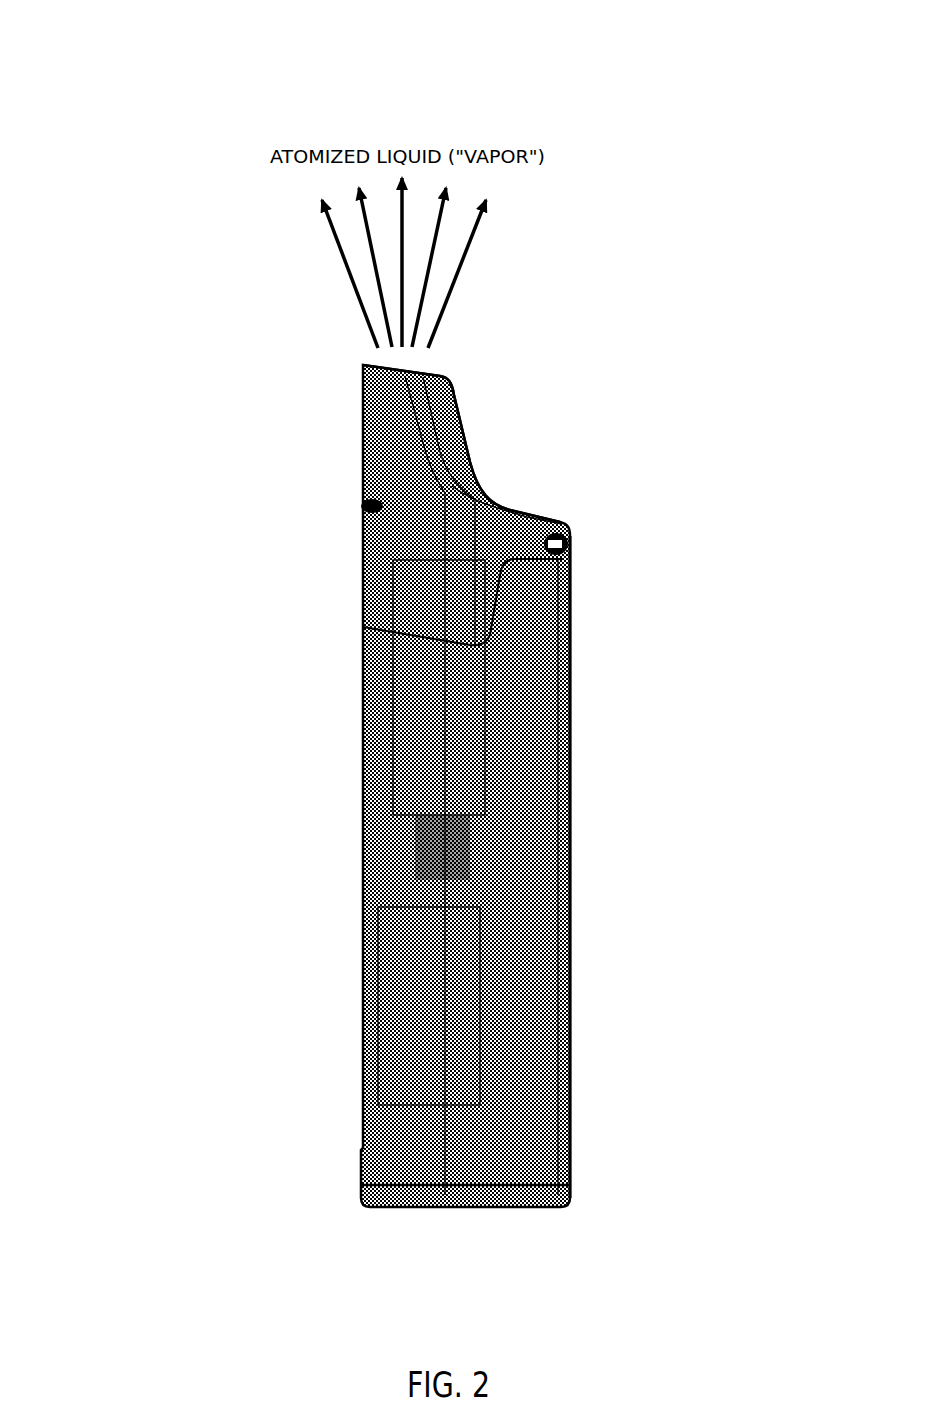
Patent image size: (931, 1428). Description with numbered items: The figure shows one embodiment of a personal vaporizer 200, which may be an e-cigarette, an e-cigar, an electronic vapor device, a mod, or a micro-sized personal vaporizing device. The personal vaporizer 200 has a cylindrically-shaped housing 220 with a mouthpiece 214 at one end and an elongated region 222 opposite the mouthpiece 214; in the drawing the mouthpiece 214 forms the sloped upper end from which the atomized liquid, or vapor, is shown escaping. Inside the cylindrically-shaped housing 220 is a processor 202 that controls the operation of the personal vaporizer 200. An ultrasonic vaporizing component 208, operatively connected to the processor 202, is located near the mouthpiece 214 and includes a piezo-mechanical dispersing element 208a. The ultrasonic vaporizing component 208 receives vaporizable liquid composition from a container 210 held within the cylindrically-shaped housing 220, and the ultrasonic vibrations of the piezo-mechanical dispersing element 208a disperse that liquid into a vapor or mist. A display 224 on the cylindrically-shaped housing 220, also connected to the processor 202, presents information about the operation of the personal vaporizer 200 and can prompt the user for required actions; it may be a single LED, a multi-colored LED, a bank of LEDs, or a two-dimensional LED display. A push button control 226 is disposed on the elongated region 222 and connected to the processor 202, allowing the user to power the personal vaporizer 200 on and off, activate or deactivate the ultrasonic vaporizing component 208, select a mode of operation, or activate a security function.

The personal vaporizer 200 is at (175, 160).
The processor 202 is at (378, 983).
The ultrasonic vaporizing component 208 is at (458, 543).
The piezo-mechanical dispersing element 208a is at (500, 548).
The container 210 is at (392, 690).
The mouthpiece 214 is at (363, 447).
The cylindrically-shaped housing 220 is at (568, 777).
The elongated region 222 is at (460, 420).
The display 224 is at (540, 835).
The push button control 226 is at (575, 970).